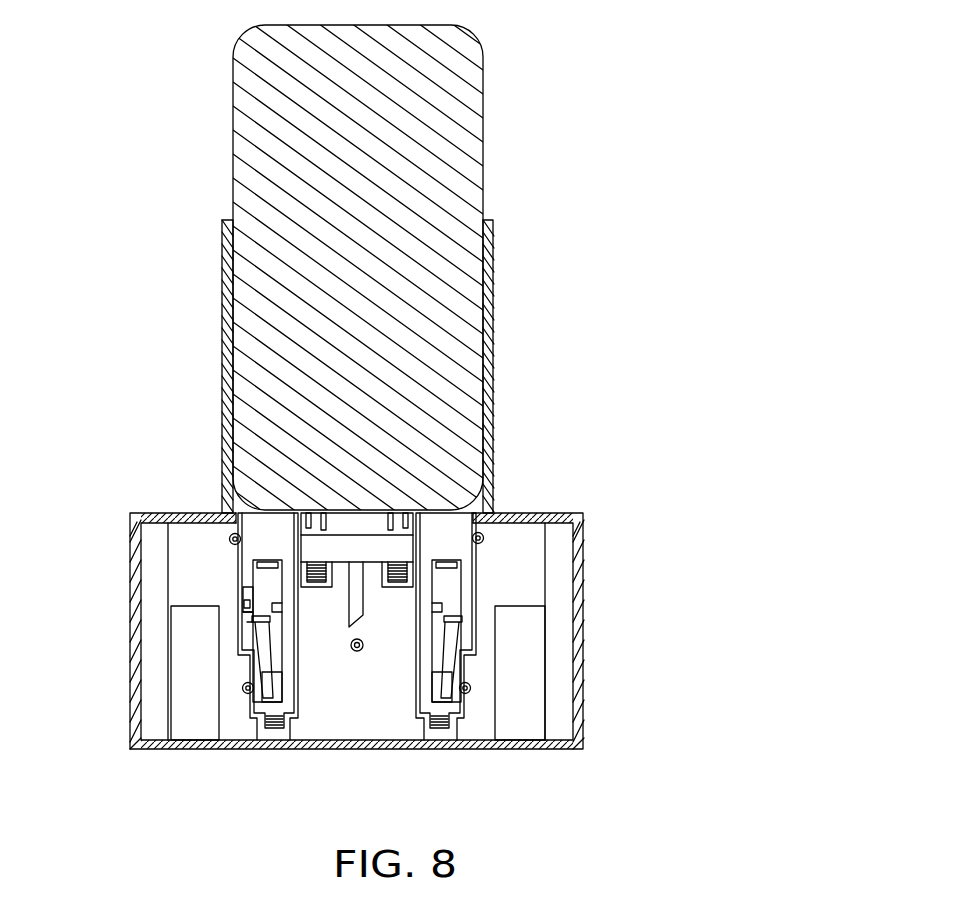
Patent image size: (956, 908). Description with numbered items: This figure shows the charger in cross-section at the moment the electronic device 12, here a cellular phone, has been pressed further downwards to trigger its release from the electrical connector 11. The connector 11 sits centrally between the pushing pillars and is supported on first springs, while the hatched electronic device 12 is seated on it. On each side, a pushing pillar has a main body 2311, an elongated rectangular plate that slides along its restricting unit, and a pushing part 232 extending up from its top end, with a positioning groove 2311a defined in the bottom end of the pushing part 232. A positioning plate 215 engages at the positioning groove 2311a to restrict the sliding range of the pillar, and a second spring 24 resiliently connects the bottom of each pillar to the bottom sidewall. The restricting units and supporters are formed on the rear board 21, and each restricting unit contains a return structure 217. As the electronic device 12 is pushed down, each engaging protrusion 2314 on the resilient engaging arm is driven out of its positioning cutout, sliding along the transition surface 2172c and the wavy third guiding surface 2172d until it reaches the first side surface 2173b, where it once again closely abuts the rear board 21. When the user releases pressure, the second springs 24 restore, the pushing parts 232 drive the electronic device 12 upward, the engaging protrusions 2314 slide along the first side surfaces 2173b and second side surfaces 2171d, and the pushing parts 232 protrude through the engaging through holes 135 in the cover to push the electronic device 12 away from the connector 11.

The electronic device 12 is at (496, 144).
The electrical connector 11 is at (376, 525).
The engaging through holes 135 is at (455, 538).
The pushing part 232 is at (492, 508).
The positioning groove 2311a is at (458, 552).
The positioning plate 215 is at (462, 566).
The return structure 217 is at (249, 578).
The second side surface 2171d is at (247, 592).
The transition surface 2172c is at (248, 603).
The third guiding surface 2172d is at (247, 613).
The first side surface 2173b is at (252, 634).
The rear board 21 is at (275, 655).
The engaging protrusion 2314 is at (269, 616).
The main body 2311 is at (428, 607).
The second spring 24 is at (440, 695).